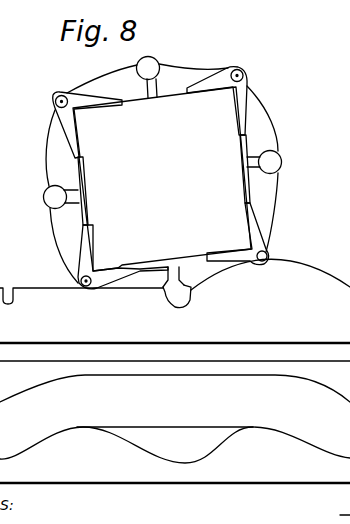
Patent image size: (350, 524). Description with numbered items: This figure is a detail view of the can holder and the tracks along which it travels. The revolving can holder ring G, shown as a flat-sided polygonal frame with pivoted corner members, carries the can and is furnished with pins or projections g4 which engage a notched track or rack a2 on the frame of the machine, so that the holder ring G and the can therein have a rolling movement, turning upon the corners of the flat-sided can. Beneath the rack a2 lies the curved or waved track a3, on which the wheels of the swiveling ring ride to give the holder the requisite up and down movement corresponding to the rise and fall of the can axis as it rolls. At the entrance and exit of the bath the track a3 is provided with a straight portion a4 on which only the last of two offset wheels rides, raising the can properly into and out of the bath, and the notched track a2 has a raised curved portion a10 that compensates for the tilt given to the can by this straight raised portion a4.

The revolving can holder ring G is at (83, 175).
The pins or projections g4 is at (244, 75).
The raised curved portion a10 is at (270, 274).
The notched track or rack a2 is at (95, 307).
The straight portion a4 is at (195, 428).
The curved or waved track a3 is at (175, 445).